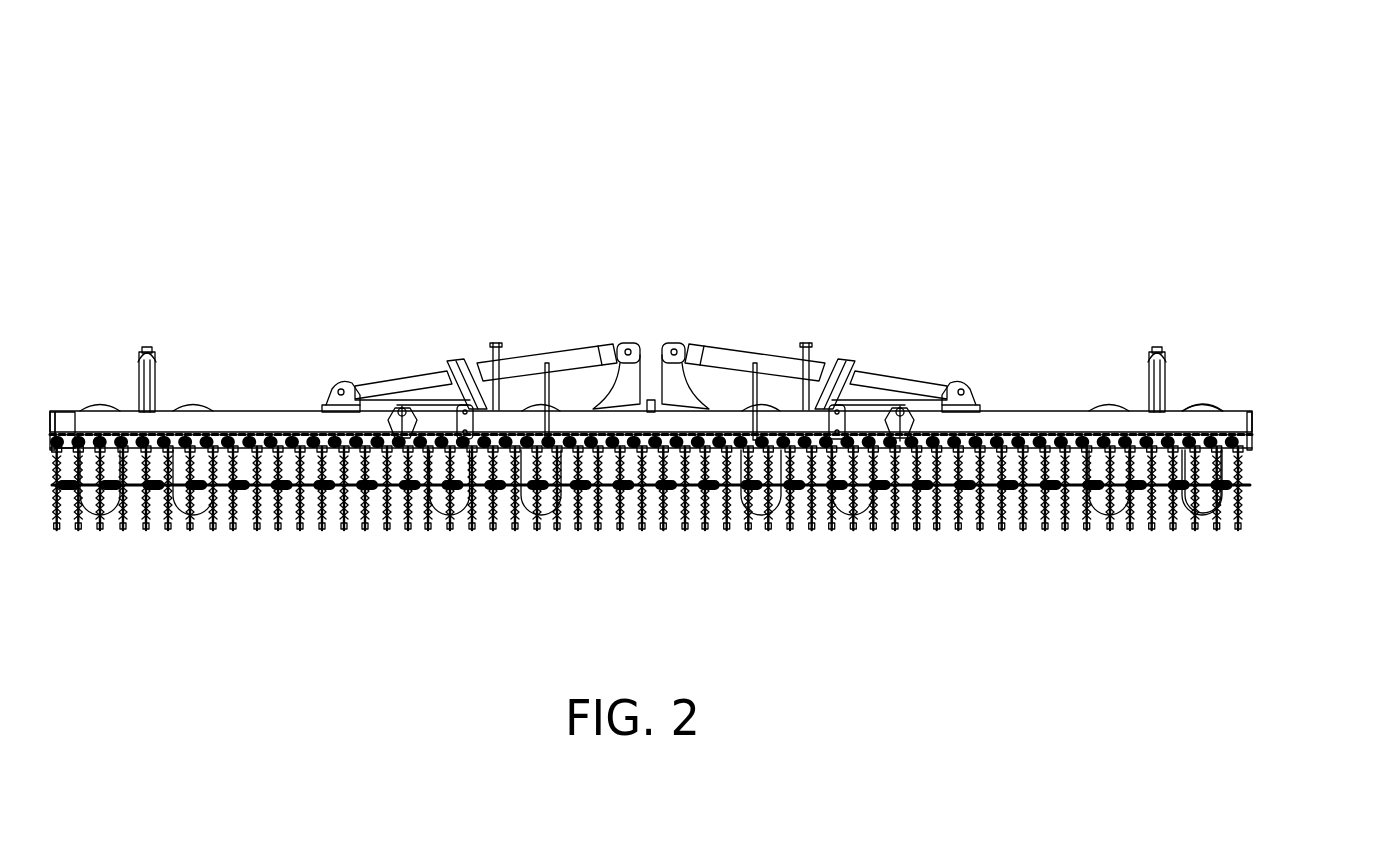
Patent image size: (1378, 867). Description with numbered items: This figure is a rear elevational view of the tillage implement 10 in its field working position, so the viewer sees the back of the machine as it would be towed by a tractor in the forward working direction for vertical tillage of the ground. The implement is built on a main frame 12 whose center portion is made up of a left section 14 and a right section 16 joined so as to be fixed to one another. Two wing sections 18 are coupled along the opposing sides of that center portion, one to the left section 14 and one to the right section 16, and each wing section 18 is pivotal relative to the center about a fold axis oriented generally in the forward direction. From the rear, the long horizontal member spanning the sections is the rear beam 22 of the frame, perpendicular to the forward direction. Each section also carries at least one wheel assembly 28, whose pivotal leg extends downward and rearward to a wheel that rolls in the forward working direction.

The tillage implement 10 is at (1236, 101).
The main frame 12 is at (1290, 428).
The left section 14 is at (548, 267).
The right section 16 is at (775, 274).
The wing section 18 is at (202, 266).
The rear beam 22 is at (71, 425).
The wheel assembly 28 is at (1216, 379).